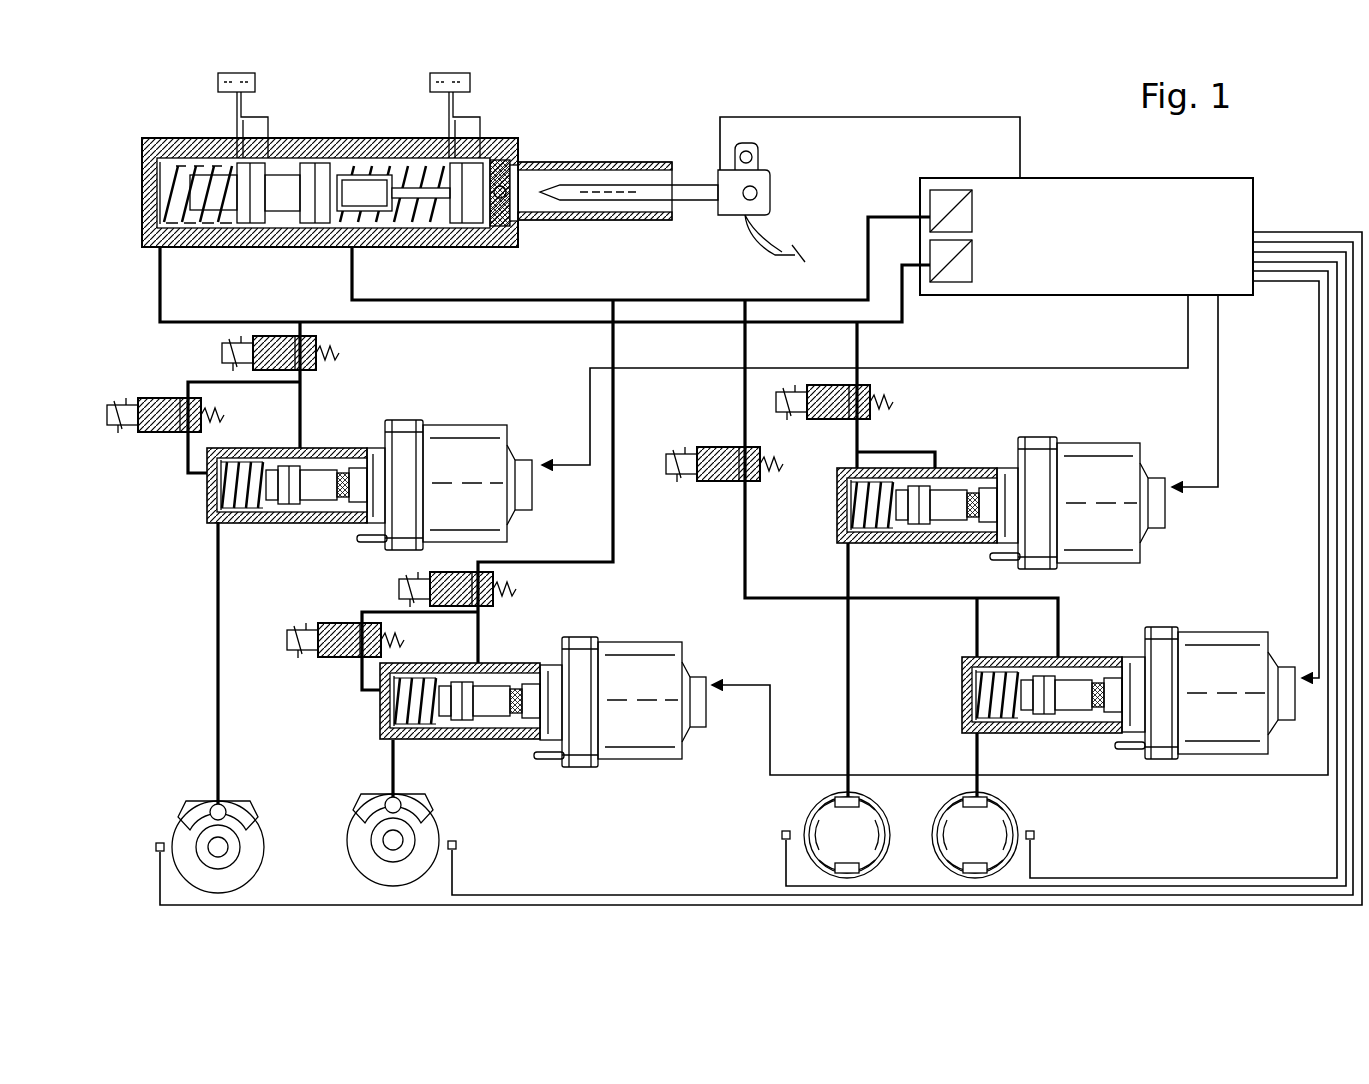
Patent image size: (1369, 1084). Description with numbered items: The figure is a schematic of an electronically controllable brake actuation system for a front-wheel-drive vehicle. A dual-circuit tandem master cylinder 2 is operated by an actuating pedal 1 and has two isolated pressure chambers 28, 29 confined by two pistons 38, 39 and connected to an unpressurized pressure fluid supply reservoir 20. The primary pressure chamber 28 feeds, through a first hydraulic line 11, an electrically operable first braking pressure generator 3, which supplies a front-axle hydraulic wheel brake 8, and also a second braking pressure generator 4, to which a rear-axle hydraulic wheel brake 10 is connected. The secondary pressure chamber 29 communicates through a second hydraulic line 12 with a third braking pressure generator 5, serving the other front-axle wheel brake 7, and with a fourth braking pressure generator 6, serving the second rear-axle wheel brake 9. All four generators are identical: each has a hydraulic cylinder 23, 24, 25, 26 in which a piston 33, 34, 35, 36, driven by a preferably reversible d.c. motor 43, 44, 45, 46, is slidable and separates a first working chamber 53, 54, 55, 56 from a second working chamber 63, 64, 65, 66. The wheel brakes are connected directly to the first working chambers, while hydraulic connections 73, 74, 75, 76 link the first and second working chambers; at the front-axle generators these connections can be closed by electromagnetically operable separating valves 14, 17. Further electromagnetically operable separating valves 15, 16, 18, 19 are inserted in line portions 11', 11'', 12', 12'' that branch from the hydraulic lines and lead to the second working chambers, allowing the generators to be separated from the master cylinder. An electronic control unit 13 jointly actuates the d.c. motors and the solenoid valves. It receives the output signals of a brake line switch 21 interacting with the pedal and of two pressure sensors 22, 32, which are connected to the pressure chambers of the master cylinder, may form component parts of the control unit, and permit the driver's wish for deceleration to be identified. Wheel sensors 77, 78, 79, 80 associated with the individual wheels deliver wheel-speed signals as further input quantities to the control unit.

The actuating pedal 1 is at (798, 252).
The tandem master cylinder 2 is at (505, 135).
The first braking pressure generator 3 is at (518, 704).
The second braking pressure generator 4 is at (1099, 699).
The third braking pressure generator 5 is at (377, 481).
The fourth braking pressure generator 6 is at (1018, 490).
The hydraulic wheel brake 7 is at (238, 815).
The hydraulic wheel brake 8 is at (379, 800).
The second hydraulic wheel brake 9 is at (875, 815).
The hydraulic wheel brake 10 is at (1007, 815).
The first hydraulic line 11 is at (641, 258).
The line portion 11' is at (579, 481).
The line portion 11'' is at (870, 478).
The second hydraulic line 12 is at (545, 284).
The line portion 12' is at (346, 385).
The line portion 12'' is at (909, 395).
The electronic control unit 13 is at (1123, 270).
The separating valve 14 is at (340, 658).
The separating valve 15 is at (494, 582).
The separating valve 16 is at (728, 482).
The separating valve 17 is at (145, 433).
The separating valve 18 is at (317, 370).
The separating valve 19 is at (872, 388).
The pressure fluid supply reservoir 20 is at (428, 82).
The brake line switch 21 is at (718, 160).
The pressure sensor 22 is at (973, 212).
The hydraulic cylinder 23 is at (500, 742).
The hydraulic cylinder 24 is at (1084, 657).
The hydraulic cylinder 25 is at (306, 525).
The hydraulic cylinder 26 is at (985, 464).
The first pressure chamber 28 is at (426, 225).
The second pressure chamber 29 is at (172, 160).
The pressure sensor 32 is at (973, 262).
The piston 33 is at (499, 685).
The piston 34 is at (1076, 733).
The piston 35 is at (321, 468).
The piston 36 is at (955, 510).
The piston 38 is at (468, 225).
The piston 39 is at (263, 225).
The d.c. motor 43 is at (640, 770).
The d.c. motor 44 is at (1218, 762).
The d.c. motor 45 is at (520, 523).
The d.c. motor 46 is at (1162, 545).
The first working chamber 53 is at (390, 706).
The first working chamber 54 is at (973, 694).
The first working chamber 55 is at (214, 500).
The first working chamber 56 is at (848, 508).
The second working chamber 63 is at (471, 740).
The second working chamber 64 is at (1051, 733).
The second working chamber 65 is at (291, 524).
The second working chamber 66 is at (934, 484).
The hydraulic connection 73 is at (383, 610).
The hydraulic connection 74 is at (1019, 605).
The hydraulic connection 75 is at (210, 378).
The hydraulic connection 76 is at (900, 448).
The wheel sensor 77 is at (159, 842).
The wheel sensor 78 is at (457, 845).
The wheel sensor 79 is at (780, 835).
The wheel sensor 80 is at (1035, 836).